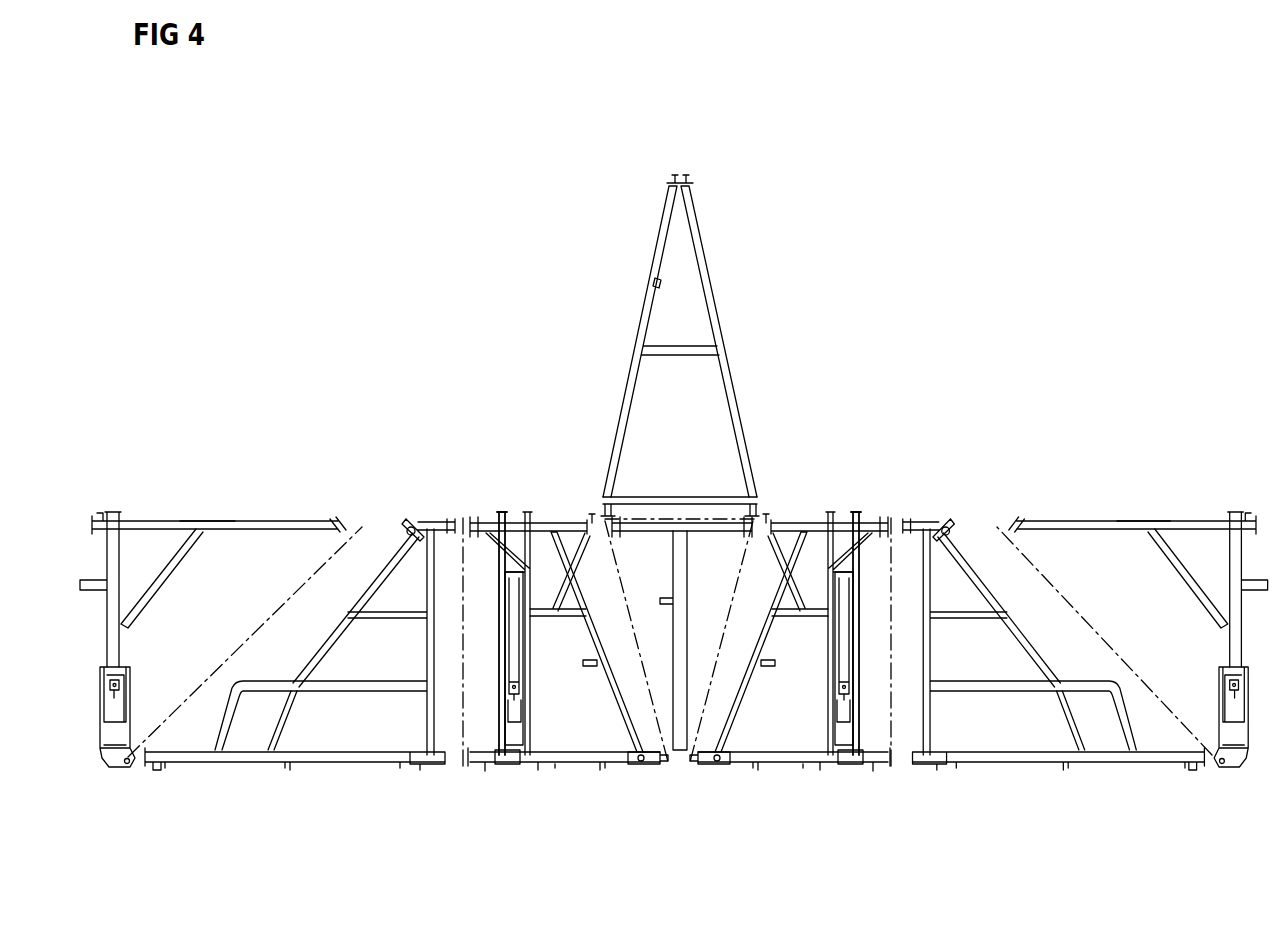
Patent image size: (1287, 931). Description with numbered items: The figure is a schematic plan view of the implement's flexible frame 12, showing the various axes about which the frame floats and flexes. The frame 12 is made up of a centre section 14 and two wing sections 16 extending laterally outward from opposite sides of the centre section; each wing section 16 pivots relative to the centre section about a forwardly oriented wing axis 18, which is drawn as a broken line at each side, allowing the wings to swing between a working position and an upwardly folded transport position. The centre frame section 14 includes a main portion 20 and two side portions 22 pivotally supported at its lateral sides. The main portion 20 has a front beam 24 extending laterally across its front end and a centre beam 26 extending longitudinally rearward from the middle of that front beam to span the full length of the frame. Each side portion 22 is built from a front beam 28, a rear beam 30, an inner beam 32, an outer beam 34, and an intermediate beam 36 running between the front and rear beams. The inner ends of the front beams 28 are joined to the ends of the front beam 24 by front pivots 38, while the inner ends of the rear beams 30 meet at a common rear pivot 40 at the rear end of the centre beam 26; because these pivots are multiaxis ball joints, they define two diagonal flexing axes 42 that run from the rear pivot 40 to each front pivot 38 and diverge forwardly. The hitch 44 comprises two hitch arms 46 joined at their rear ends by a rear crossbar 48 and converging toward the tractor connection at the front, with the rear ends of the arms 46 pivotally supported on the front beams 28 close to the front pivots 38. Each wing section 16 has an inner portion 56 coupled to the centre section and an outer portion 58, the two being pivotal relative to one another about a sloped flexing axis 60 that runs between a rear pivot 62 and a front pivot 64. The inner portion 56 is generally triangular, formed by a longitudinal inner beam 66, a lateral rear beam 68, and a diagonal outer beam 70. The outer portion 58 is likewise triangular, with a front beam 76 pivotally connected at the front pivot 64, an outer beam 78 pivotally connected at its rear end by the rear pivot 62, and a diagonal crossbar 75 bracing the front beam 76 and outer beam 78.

The flexible frame 12 is at (352, 128).
The centre section 14 is at (862, 829).
The wing section 16 is at (425, 353).
The wing axis 18 is at (463, 615).
The main portion 20 is at (693, 554).
The side portion 22 is at (522, 488).
The front beam 24 is at (647, 531).
The centre beam 26 is at (688, 585).
The front beam 28 is at (545, 525).
The rear beam 30 is at (572, 762).
The inner beam 32 is at (610, 680).
The outer beam 34 is at (506, 633).
The intermediate beam 36 is at (523, 665).
The front pivot 38 is at (592, 531).
The rear pivot 40 is at (650, 768).
The flexing axis 42 is at (634, 622).
The hitch 44 is at (605, 318).
The hitch arm 46 is at (661, 248).
The rear crossbar 48 is at (652, 500).
The inner portion 56 is at (425, 496).
The outer portion 58 is at (207, 496).
The flexing axis 60 is at (247, 632).
The rear pivot 62 is at (116, 760).
The front pivot 64 is at (408, 531).
The inner beam 66 is at (427, 661).
The rear beam 68 is at (356, 749).
The outer beam 70 is at (336, 634).
The crossbar 75 is at (153, 591).
The front beam 76 is at (248, 522).
The outer beam 78 is at (116, 655).